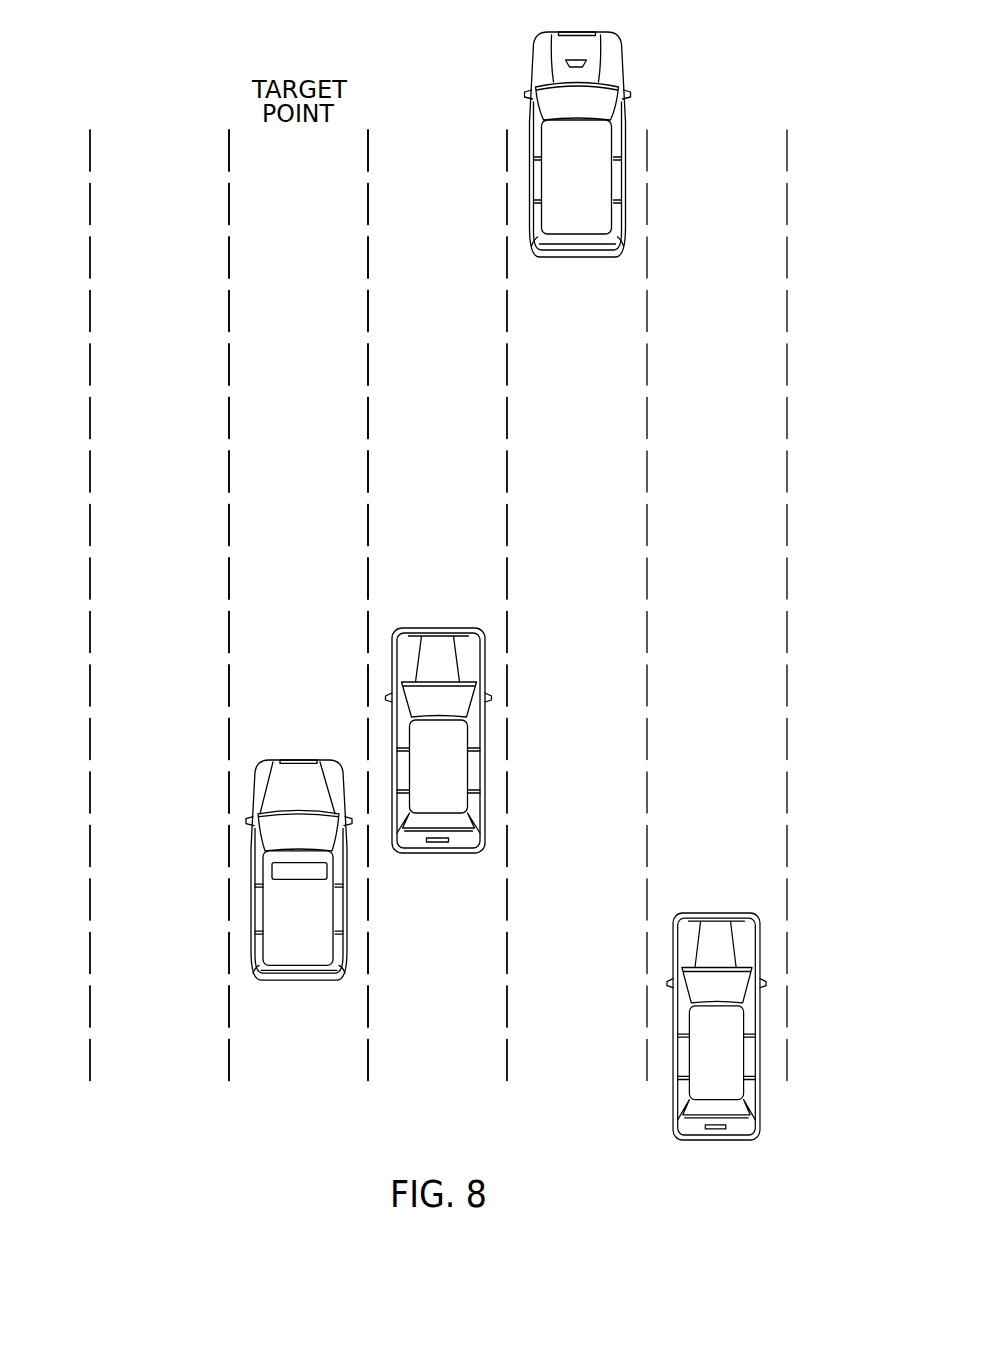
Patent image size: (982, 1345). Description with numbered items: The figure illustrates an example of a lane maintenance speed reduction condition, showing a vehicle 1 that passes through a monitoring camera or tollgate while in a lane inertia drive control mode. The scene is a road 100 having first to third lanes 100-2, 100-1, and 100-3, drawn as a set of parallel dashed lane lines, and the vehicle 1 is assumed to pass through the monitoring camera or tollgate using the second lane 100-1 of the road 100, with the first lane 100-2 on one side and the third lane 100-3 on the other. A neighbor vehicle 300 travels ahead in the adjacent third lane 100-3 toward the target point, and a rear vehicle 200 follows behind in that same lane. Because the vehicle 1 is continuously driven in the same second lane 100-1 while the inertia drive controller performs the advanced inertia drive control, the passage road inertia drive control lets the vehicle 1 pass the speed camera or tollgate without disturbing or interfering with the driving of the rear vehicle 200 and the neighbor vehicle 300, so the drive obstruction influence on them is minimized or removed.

The road 100 is at (145, 113).
The second lane 100-1 is at (333, 535).
The first lane 100-2 is at (195, 496).
The third lane 100-3 is at (472, 574).
The vehicle 1 is at (300, 983).
The neighbor vehicle 300 is at (485, 777).
The rear vehicle 200 is at (673, 1012).